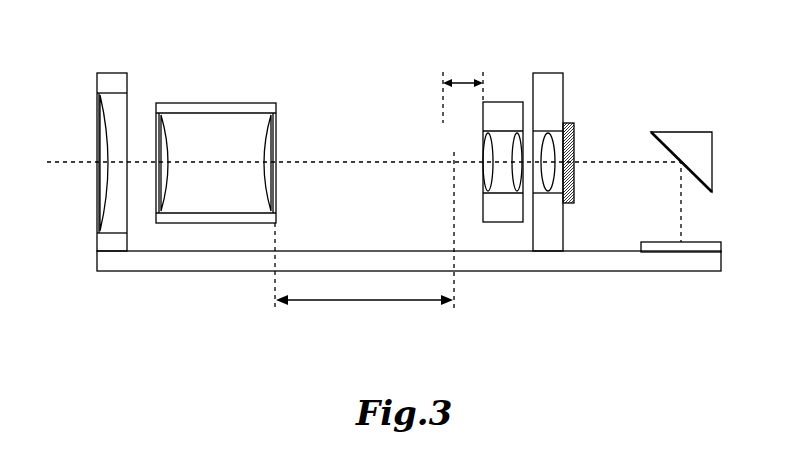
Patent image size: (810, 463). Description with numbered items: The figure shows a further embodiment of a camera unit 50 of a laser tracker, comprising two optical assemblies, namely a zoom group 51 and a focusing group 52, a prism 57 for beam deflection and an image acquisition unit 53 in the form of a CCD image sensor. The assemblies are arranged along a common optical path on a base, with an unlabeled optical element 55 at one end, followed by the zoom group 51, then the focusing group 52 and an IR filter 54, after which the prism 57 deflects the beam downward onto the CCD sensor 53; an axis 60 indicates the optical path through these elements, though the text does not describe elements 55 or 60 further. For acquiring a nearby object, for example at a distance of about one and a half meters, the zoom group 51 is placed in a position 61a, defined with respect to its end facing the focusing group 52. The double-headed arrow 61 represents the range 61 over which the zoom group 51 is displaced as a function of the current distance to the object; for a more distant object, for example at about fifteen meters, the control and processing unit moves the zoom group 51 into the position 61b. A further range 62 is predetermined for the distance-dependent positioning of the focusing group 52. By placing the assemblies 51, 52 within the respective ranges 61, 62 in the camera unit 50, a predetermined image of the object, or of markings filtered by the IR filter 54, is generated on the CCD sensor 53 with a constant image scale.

The camera unit 50 is at (384, 140).
The collimating lens unit 55 is at (142, 154).
The zoom group 51 is at (232, 146).
The optical axis 60 is at (348, 180).
The position 61a is at (238, 271).
The position 61b is at (495, 236).
The range 61 is at (364, 317).
The range 62 is at (438, 81).
The focusing group 52 is at (522, 130).
The IR filter 54 is at (607, 136).
The prism 57 is at (708, 146).
The image acquisition unit 53 is at (706, 224).